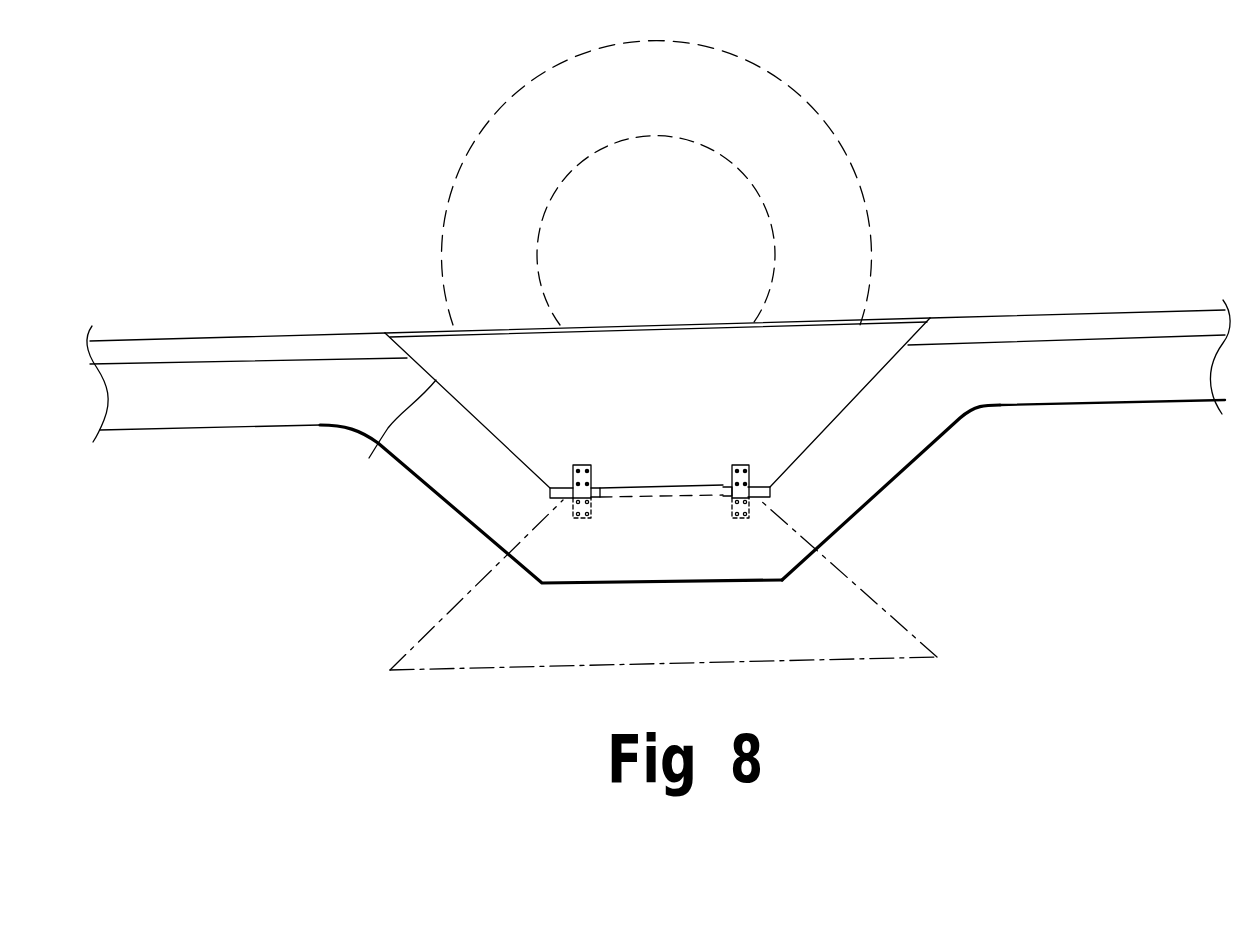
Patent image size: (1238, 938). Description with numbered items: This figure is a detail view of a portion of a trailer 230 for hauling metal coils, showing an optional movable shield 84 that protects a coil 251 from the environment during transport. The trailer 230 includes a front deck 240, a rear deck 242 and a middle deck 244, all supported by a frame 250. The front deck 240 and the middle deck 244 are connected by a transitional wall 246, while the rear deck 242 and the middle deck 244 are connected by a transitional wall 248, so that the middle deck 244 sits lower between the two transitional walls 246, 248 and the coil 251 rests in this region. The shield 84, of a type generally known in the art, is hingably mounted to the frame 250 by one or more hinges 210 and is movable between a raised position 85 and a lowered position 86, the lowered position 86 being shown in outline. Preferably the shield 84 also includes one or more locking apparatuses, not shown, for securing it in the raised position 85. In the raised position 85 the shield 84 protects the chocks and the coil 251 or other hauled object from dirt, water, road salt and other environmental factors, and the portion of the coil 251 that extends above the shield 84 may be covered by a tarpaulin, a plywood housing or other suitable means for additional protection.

The trailer 230 is at (715, 303).
The front deck 240 is at (225, 333).
The rear deck 242 is at (1040, 316).
The coil 251 is at (755, 58).
The transitional wall 248 is at (880, 370).
The transitional wall 246 is at (460, 407).
The movable shield 84 is at (848, 408).
The raised position 85 is at (372, 443).
The frame 250 is at (885, 486).
The middle deck 244 is at (565, 500).
The hinge 210 is at (773, 497).
The lowered position 86 is at (463, 594).